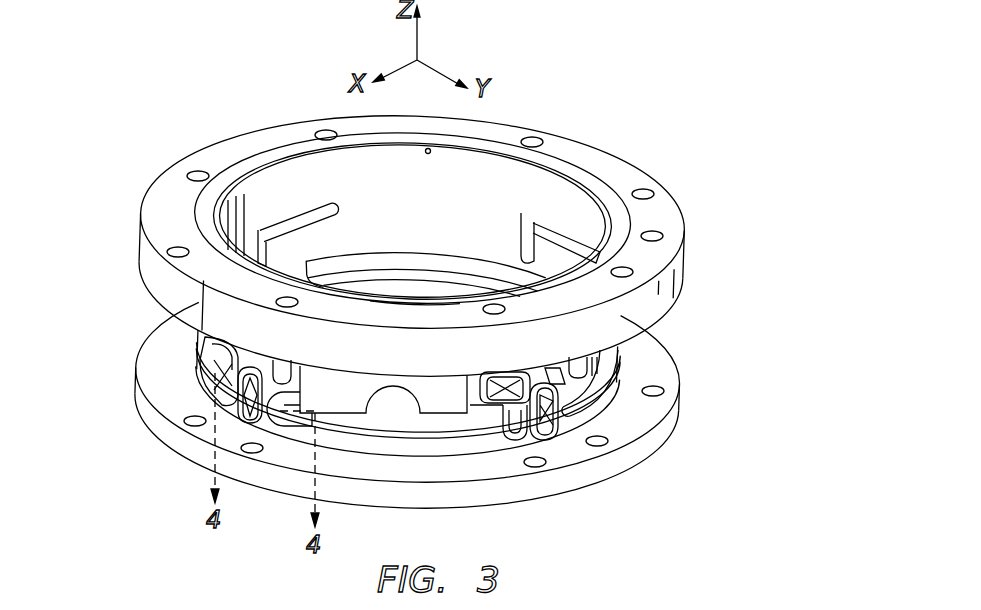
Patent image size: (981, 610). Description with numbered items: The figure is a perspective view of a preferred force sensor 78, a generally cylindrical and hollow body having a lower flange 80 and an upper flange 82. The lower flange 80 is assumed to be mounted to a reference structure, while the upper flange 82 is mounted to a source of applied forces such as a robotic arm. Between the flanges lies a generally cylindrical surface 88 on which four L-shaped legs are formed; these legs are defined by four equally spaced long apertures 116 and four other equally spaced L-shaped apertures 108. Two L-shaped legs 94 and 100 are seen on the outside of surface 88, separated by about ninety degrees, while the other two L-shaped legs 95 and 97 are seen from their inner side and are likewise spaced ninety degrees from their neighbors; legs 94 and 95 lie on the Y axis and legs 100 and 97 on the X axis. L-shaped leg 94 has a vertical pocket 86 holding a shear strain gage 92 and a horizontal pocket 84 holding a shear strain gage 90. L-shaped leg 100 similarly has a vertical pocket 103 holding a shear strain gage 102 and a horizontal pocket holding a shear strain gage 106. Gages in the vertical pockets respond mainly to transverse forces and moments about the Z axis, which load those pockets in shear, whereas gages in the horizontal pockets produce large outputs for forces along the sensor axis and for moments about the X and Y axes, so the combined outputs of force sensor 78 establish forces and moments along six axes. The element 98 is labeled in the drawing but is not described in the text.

The force sensor 78 is at (429, 350).
The lower flange 80 is at (295, 487).
The upper flange 82 is at (627, 181).
The horizontal pocket 84 is at (477, 433).
The vertical pocket 86 is at (547, 440).
The cylindrical surface 88 is at (380, 413).
The shear strain gage 90 is at (497, 410).
The shear strain gage 92 is at (545, 430).
The L-shaped leg 94 is at (552, 373).
The L-shaped leg 95 is at (283, 243).
The L-shaped leg 97 is at (547, 252).
The curved slot 98 is at (618, 376).
The L-shaped leg 100 is at (230, 377).
The shear strain gage 102 is at (243, 400).
The vertical pocket 103 is at (247, 445).
The shear strain gage 106 is at (207, 348).
The L-shaped aperture 108 is at (327, 207).
The long aperture 116 is at (387, 262).